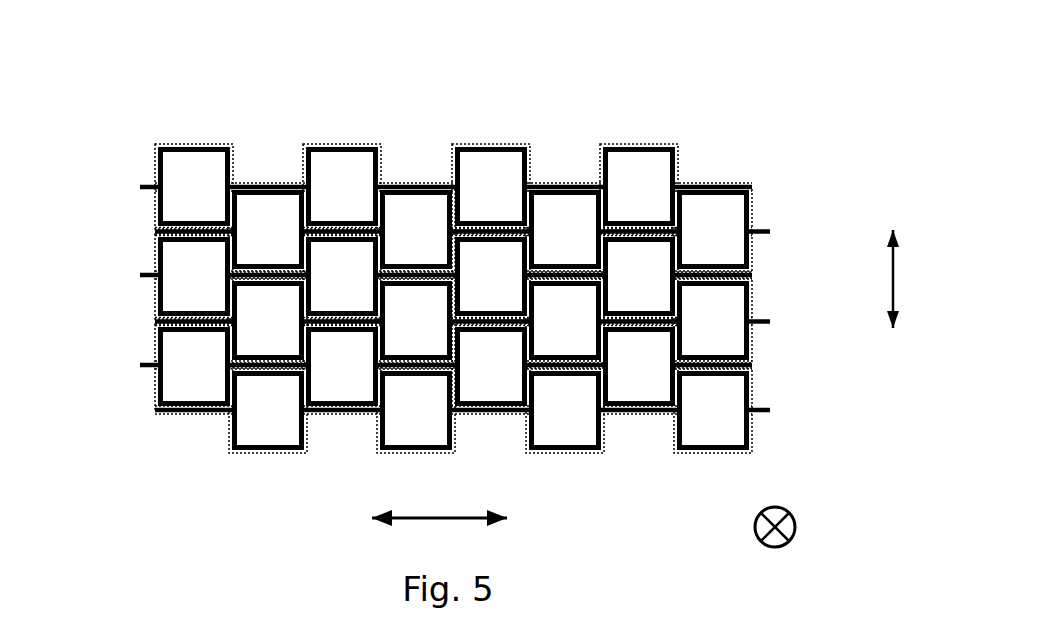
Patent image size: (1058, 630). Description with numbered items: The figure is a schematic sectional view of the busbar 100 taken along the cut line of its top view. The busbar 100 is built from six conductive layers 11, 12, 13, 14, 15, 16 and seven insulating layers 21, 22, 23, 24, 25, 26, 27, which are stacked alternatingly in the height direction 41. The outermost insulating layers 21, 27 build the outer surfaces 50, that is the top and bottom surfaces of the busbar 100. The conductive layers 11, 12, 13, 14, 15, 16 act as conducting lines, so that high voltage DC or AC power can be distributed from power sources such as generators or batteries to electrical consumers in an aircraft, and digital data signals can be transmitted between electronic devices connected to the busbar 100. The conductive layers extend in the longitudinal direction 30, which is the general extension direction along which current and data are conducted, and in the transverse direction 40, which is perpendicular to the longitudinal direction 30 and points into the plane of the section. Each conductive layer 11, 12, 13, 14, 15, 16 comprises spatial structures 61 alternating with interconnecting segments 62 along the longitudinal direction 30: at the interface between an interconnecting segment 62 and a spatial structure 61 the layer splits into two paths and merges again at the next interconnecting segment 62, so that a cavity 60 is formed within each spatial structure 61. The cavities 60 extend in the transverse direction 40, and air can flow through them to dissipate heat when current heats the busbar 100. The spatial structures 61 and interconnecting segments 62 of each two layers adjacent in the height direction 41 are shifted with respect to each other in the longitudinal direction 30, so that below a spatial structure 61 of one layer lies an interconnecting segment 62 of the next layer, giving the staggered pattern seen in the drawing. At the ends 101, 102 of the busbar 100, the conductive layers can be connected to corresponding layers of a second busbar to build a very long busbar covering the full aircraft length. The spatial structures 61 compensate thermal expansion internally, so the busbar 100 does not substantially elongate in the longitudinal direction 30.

The busbar 100 is at (755, 58).
The conductive layer 11 is at (737, 182).
The conductive layer 12 is at (762, 225).
The conductive layer 13 is at (755, 270).
The conductive layer 14 is at (764, 312).
The conductive layer 15 is at (755, 361).
The conductive layer 16 is at (771, 404).
The insulating layer 21 is at (154, 163).
The insulating layer 22 is at (154, 210).
The insulating layer 23 is at (154, 253).
The insulating layer 24 is at (154, 297).
The insulating layer 25 is at (154, 342).
The insulating layer 26 is at (154, 392).
The insulating layer 27 is at (224, 432).
The longitudinal direction 30 is at (439, 534).
The height direction 41 is at (910, 279).
The outer surface 50 is at (622, 130).
The cavity 60 is at (358, 178).
The spatial structure 61 is at (208, 122).
The interconnecting segment 62 is at (273, 150).
The end of the busbar 101 is at (85, 368).
The end of the busbar 102 is at (770, 452).
The transverse direction 40 is at (789, 550).